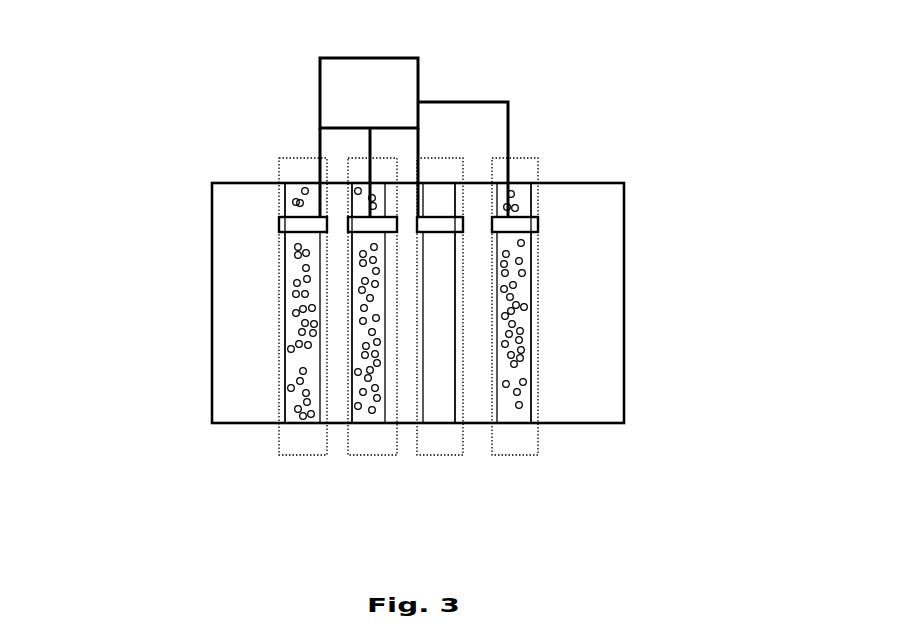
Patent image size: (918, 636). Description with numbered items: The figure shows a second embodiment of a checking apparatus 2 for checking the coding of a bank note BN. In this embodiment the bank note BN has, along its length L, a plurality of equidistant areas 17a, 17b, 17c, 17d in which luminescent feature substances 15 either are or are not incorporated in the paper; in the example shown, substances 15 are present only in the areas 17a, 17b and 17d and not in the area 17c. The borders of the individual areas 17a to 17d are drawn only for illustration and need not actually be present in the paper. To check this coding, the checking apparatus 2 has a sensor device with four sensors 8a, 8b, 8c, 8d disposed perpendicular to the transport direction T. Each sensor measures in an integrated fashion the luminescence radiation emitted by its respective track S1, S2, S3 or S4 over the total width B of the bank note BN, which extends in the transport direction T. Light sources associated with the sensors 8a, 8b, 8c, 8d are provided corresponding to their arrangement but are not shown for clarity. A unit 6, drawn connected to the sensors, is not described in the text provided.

The checking apparatus 2 is at (193, 87).
The control unit 6 is at (418, 82).
The sensor 8a is at (290, 197).
The sensor 8b is at (360, 220).
The sensor 8c is at (443, 222).
The sensor 8d is at (525, 225).
The substances 15 is at (284, 330).
The area 17a is at (283, 296).
The area 17b is at (360, 217).
The area 17c is at (442, 388).
The area 17d is at (535, 297).
The bank note BN is at (624, 236).
The width B is at (723, 190).
The length L is at (624, 507).
The transport direction T is at (160, 357).
The track S1 is at (273, 405).
The track S2 is at (397, 405).
The track S3 is at (465, 400).
The track S4 is at (533, 390).